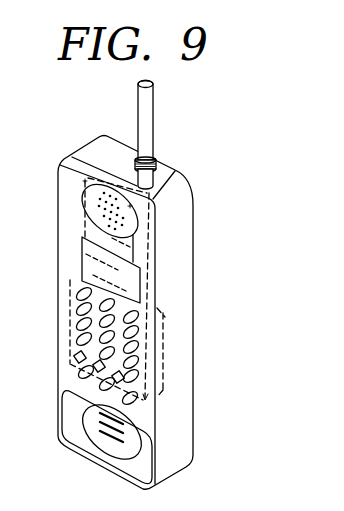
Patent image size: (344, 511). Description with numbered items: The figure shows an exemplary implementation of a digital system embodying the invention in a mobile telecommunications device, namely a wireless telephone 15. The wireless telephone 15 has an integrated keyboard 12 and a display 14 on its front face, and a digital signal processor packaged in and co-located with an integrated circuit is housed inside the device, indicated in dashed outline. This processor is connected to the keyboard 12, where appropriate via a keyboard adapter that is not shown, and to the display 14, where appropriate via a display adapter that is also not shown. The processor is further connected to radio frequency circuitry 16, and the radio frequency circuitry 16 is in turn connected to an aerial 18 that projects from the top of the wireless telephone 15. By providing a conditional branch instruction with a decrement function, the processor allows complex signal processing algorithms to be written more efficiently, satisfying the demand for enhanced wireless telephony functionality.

The aerial 18 is at (147, 115).
The radio frequency (RF) circuitry 16 is at (83, 229).
The display 14 is at (83, 260).
The keyboard 12 is at (78, 323).
The wireless telephone 15 is at (185, 410).